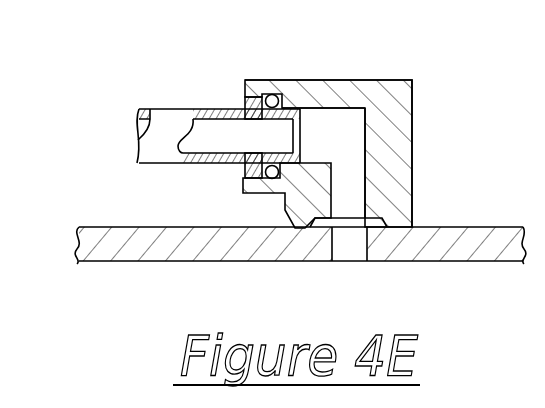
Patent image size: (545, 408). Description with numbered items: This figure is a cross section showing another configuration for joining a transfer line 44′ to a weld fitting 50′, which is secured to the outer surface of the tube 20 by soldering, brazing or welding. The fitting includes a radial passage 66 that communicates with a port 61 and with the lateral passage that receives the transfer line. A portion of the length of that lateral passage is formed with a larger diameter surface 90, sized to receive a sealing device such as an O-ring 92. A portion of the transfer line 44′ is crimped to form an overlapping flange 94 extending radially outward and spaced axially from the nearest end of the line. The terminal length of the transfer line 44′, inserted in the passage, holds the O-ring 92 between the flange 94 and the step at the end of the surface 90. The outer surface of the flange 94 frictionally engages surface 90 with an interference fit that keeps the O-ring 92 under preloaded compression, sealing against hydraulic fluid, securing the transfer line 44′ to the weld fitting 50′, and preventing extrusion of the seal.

The tube 20 is at (503, 227).
The port 61 is at (344, 262).
The transfer line 44′ is at (139, 110).
The O-ring 92 is at (280, 102).
The weld fitting 50′ is at (412, 92).
The larger diameter surface 90 is at (245, 97).
The overlapping flange 94 is at (258, 95).
The radial passage 66 is at (366, 176).